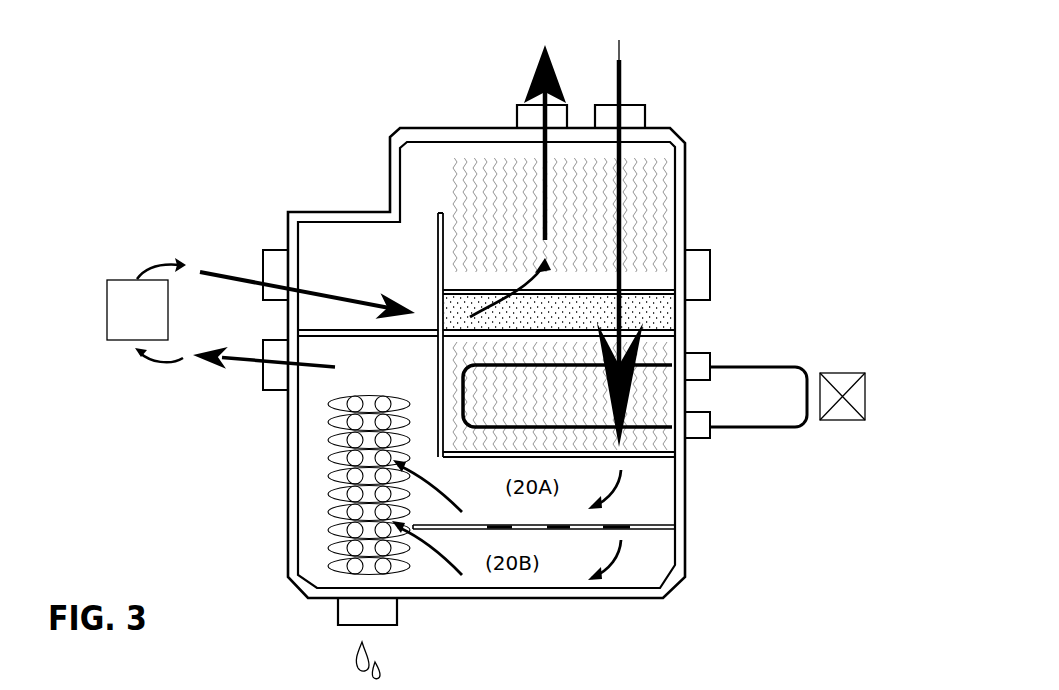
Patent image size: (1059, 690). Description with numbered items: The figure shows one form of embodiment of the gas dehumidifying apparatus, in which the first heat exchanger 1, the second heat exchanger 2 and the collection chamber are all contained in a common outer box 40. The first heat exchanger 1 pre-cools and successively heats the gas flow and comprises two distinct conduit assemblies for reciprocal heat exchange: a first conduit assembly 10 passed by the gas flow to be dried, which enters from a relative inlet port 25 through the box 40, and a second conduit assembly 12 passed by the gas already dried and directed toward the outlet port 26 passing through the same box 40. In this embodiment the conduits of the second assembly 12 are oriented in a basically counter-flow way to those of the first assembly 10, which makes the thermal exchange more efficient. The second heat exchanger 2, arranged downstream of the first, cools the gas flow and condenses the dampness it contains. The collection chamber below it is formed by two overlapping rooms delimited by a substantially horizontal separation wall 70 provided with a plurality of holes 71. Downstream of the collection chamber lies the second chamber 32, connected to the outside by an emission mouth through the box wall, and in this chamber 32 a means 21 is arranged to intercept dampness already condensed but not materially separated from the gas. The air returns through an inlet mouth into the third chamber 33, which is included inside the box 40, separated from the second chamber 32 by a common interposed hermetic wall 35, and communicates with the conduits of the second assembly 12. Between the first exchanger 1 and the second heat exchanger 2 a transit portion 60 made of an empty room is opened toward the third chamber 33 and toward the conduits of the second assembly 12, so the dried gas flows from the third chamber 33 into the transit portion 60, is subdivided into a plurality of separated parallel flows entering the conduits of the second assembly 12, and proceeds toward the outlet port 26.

The first heat exchanger 1 is at (648, 212).
The second heat exchanger 2 is at (647, 387).
The first conduit assembly 10 is at (582, 192).
The second conduit assembly 12 is at (545, 192).
The means for intercepting dampness 21 is at (340, 512).
The inlet port 25 is at (638, 115).
The outlet port 26 is at (695, 267).
The second chamber 32 is at (277, 378).
The third chamber 33 is at (335, 248).
The partition plate 35 is at (422, 333).
The outer box 40 is at (665, 583).
The transit portion 60 is at (645, 310).
The separation wall 70 is at (648, 528).
The holes 71 is at (492, 525).